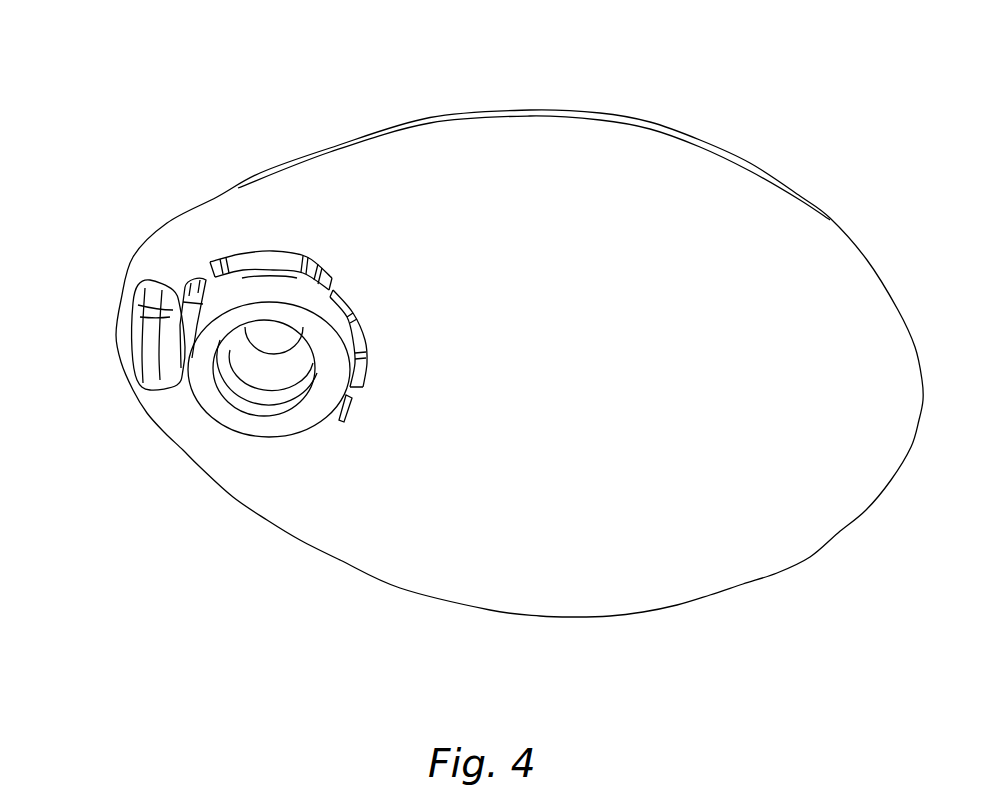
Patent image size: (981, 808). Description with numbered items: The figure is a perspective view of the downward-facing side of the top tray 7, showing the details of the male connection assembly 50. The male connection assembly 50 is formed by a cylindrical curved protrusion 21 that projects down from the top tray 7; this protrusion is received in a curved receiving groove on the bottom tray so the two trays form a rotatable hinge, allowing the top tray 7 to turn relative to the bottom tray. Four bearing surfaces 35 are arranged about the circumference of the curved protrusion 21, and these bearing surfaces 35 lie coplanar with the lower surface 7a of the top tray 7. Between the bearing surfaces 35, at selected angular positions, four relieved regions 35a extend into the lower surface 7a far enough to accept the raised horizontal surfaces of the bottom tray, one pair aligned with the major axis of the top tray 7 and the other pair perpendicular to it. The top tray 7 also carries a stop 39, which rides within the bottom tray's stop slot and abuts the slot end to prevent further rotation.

The top tray 7 is at (543, 110).
The lower surface of top tray 7a is at (534, 231).
The curved protrusion 21 is at (242, 312).
The bearing surfaces 35 is at (331, 288).
The relieved regions 35a is at (362, 342).
The stop 39 is at (152, 343).
The male connection assembly 50 is at (215, 512).